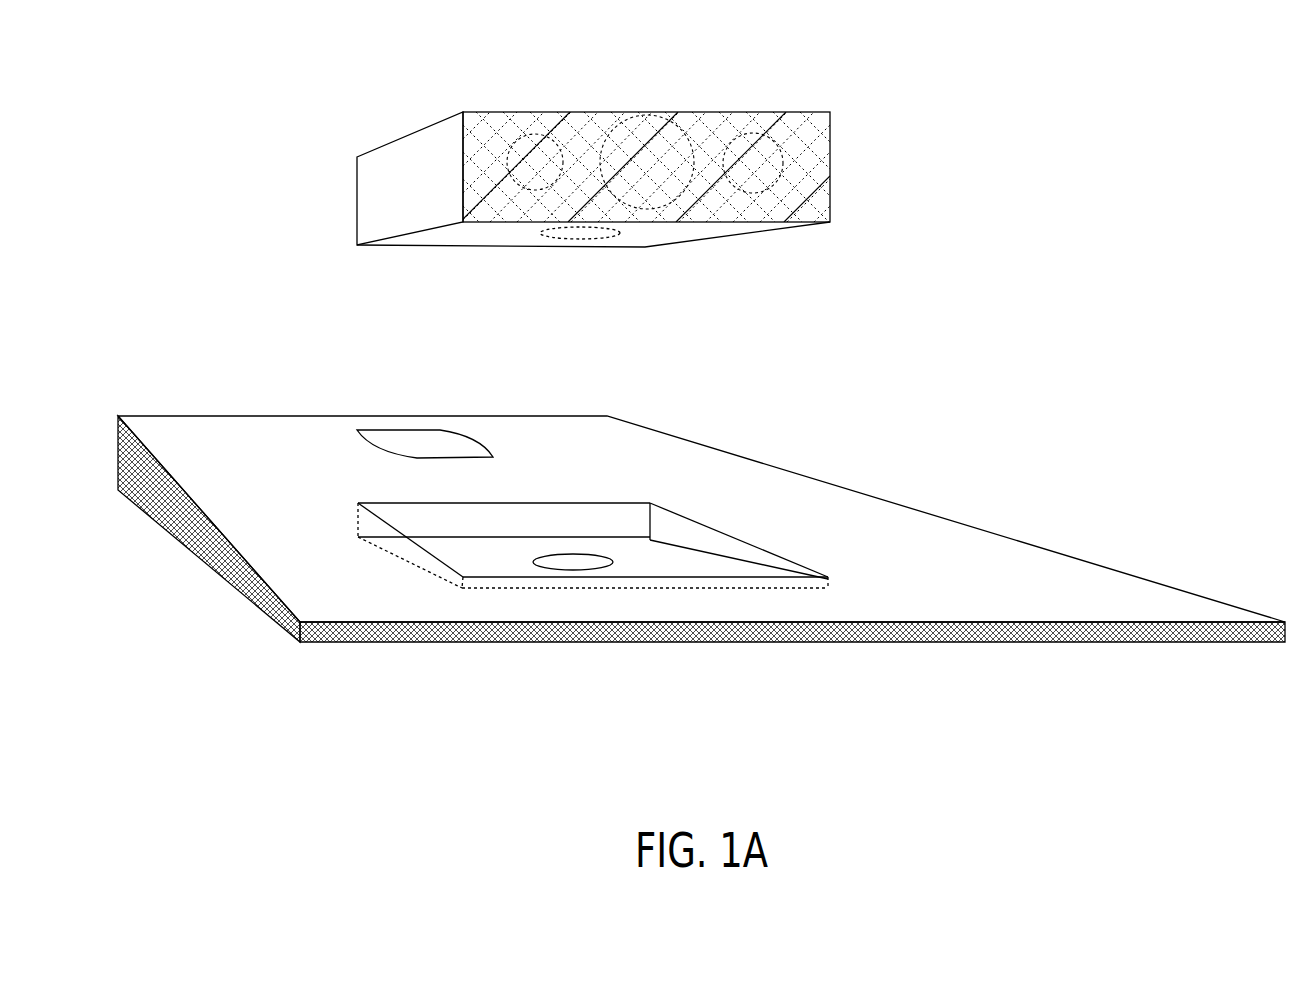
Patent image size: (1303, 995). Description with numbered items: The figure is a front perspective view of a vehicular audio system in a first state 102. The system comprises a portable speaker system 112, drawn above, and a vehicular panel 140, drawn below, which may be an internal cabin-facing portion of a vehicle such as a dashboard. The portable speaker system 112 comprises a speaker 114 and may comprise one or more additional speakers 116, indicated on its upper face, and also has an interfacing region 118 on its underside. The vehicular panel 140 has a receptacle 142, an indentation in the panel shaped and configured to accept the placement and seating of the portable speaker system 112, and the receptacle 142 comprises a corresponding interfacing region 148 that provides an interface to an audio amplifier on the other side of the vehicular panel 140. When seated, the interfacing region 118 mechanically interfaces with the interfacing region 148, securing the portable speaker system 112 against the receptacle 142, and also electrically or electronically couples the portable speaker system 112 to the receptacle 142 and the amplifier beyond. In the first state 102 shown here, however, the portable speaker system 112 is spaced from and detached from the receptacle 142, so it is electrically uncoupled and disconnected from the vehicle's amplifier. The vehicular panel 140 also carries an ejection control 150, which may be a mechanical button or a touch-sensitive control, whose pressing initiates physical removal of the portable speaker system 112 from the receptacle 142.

The first state 102 is at (1228, 287).
The portable speaker system 112 is at (664, 182).
The speaker 114 is at (645, 132).
The additional speakers 116 is at (757, 150).
The interfacing region 118 is at (643, 231).
The vehicular panel 140 is at (701, 534).
The receptacle 142 is at (656, 557).
The interfacing region 148 is at (512, 560).
The ejection control 150 is at (427, 437).